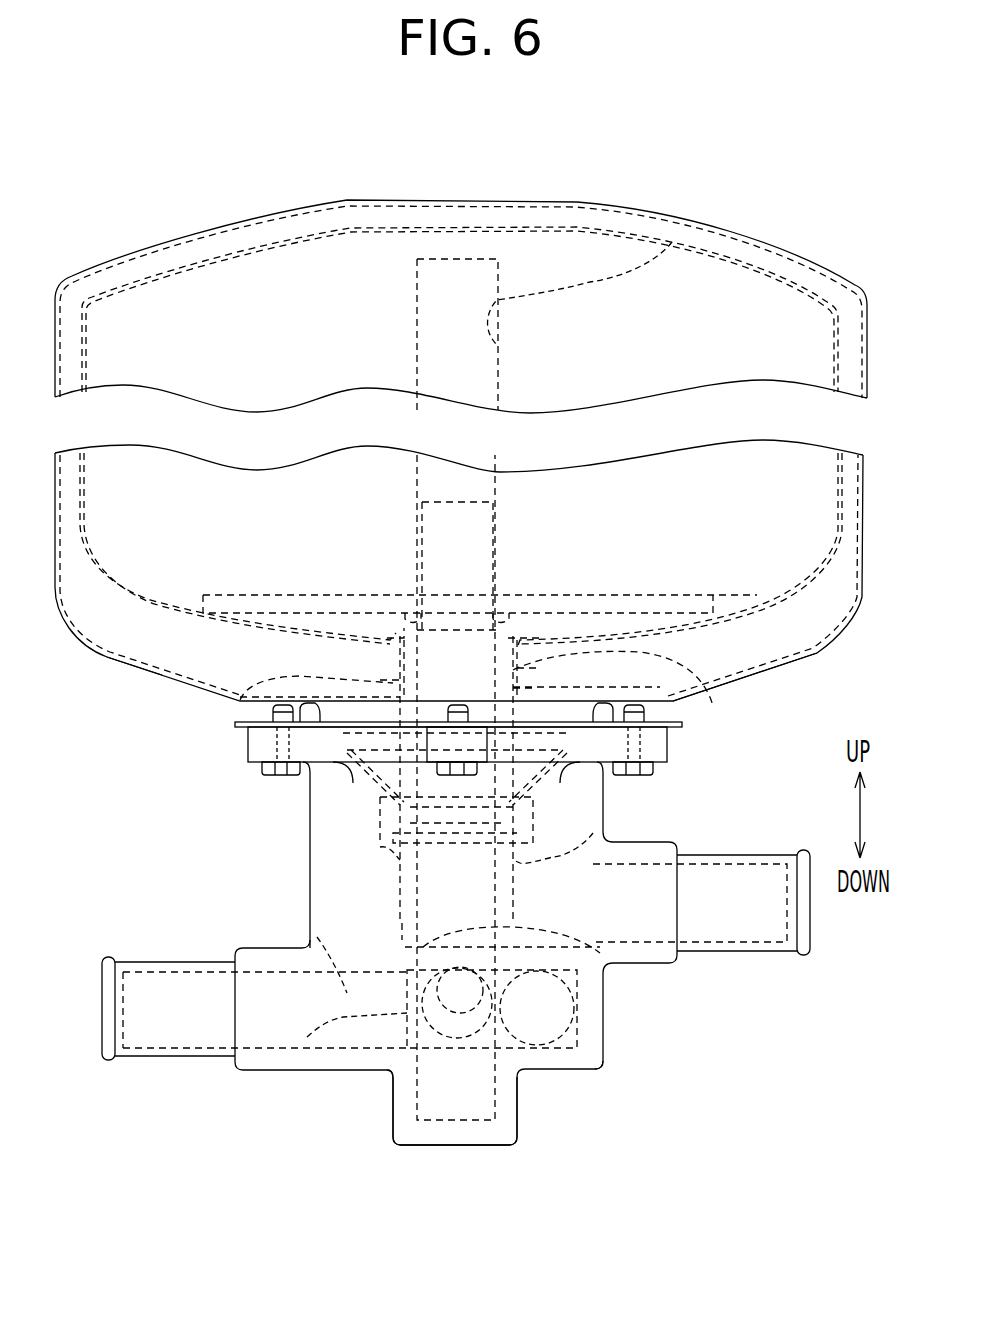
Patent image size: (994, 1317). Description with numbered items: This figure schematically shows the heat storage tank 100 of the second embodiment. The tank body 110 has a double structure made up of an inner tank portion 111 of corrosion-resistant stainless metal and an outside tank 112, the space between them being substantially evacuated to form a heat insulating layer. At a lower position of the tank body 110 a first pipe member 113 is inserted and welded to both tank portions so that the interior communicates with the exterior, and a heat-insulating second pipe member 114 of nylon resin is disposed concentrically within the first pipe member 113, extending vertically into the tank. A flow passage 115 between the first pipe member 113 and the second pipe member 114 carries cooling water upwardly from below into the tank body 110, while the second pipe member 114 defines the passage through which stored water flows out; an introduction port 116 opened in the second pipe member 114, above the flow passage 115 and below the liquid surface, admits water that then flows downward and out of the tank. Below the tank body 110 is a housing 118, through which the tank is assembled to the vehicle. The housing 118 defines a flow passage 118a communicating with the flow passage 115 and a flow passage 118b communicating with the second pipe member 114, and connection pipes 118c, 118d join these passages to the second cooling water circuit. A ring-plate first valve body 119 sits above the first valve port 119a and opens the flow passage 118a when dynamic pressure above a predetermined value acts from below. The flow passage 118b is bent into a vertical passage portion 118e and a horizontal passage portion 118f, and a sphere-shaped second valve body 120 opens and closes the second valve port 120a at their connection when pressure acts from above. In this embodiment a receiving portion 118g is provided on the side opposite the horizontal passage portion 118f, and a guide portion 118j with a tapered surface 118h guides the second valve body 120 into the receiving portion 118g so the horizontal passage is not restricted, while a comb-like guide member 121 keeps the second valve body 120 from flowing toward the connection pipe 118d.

The heat storage tank 100 is at (160, 686).
The tank body 110 is at (760, 681).
The inner tank portion 111 is at (815, 578).
The outside tank 112 is at (787, 663).
The first pipe member 113 is at (710, 704).
The second pipe member 114 is at (672, 242).
The flow passage 115 is at (235, 708).
The introduction port 116 is at (458, 277).
The housing 118 is at (607, 1078).
The flow passage 118a is at (738, 883).
The flow passage 118b is at (187, 1032).
The connection pipe 118c is at (803, 957).
The connection pipe 118d is at (112, 1060).
The vertical passage portion 118e is at (402, 923).
The horizontal passage portion 118f is at (308, 930).
The receiving portion 118g is at (570, 1042).
The tapered surface 118h is at (377, 1070).
The guide portion 118j is at (428, 1062).
The first valve body 119 is at (380, 847).
The first valve port 119a is at (593, 833).
The second valve body 120 is at (670, 963).
The second valve port 120a is at (590, 980).
The guide member 121 is at (300, 1037).